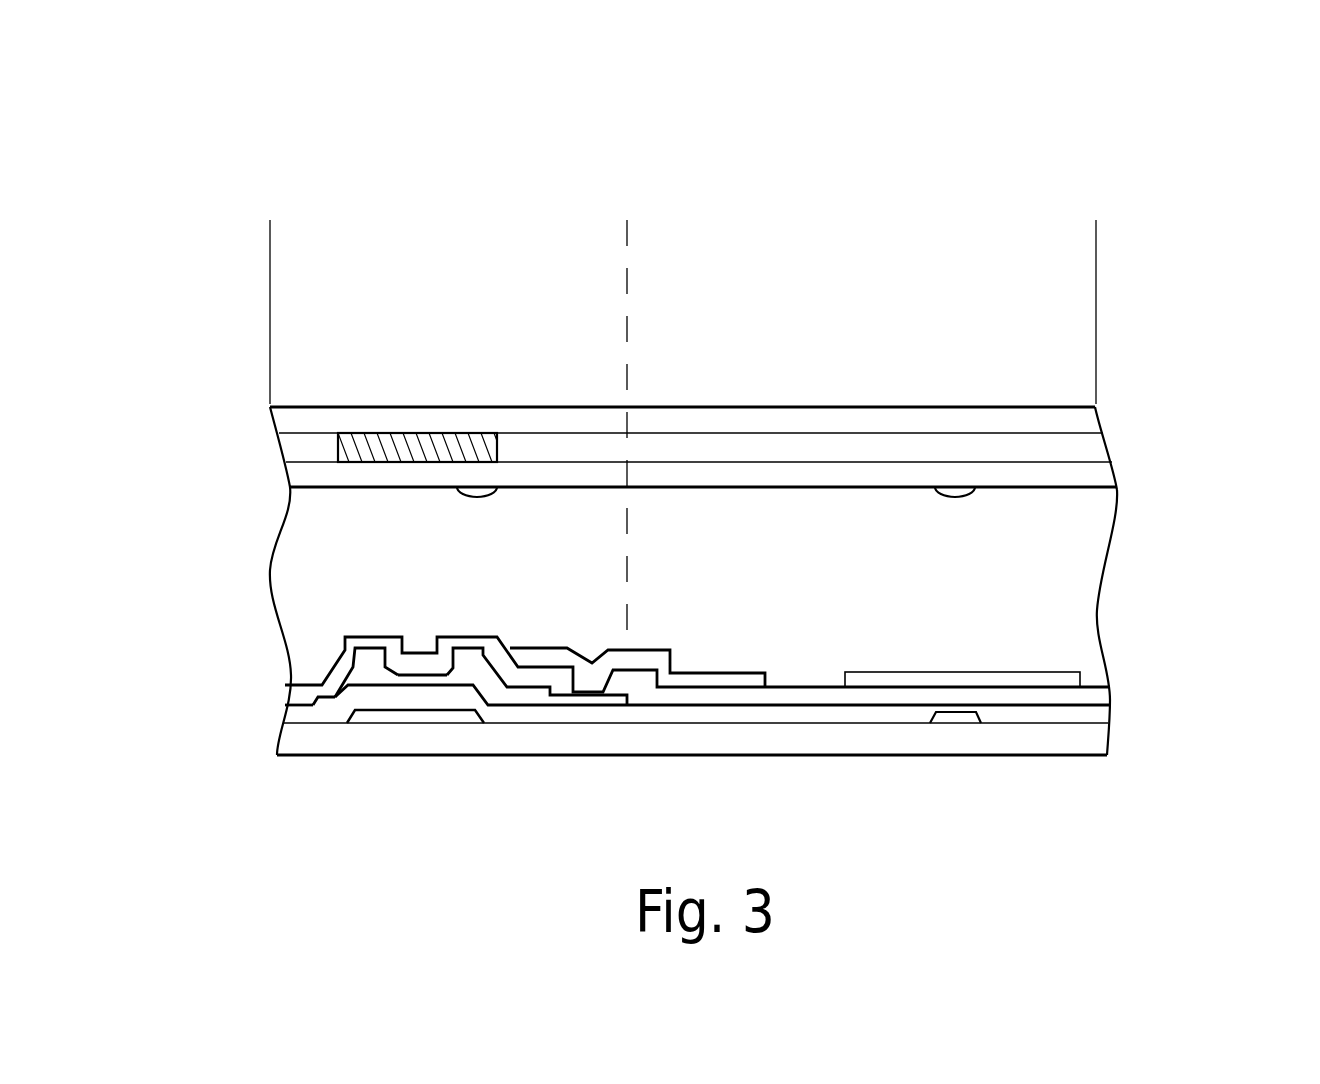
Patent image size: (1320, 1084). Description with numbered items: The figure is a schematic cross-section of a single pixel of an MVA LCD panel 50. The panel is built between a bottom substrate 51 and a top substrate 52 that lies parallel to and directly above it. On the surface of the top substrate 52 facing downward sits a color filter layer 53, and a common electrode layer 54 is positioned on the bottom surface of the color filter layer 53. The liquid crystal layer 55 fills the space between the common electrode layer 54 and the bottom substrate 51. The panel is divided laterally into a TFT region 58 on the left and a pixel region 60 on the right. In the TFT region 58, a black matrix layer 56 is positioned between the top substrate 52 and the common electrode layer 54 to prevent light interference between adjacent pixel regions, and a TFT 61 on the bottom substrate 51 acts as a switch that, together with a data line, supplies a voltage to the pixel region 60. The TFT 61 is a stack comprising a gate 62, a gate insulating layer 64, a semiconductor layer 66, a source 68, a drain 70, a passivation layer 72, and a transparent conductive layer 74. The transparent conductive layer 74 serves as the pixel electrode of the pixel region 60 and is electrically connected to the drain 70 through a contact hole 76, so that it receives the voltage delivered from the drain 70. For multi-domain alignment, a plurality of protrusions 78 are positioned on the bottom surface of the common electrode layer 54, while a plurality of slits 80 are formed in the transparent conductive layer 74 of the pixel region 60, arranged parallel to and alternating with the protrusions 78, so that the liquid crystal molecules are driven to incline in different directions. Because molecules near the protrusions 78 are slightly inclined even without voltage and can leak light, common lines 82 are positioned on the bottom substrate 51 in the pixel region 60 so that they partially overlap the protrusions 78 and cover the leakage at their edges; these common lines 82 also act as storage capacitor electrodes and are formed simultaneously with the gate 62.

The MVA LCD panel 50 is at (1098, 198).
The bottom substrate 51 is at (1053, 756).
The top substrate 52 is at (1002, 405).
The color filter layer 53 is at (1090, 447).
The common electrode layer 54 is at (1095, 479).
The liquid crystal layer 55 is at (1113, 515).
The black matrix layer 56 is at (358, 452).
The TFT region 58 is at (627, 239).
The pixel region 60 is at (1096, 239).
The TFT 61 is at (425, 625).
The gate 62 is at (451, 713).
The gate insulating layer 64 is at (403, 698).
The semiconductor layer 66 is at (313, 704).
The source 68 is at (343, 648).
The drain 70 is at (494, 676).
The passivation layer 72 is at (295, 700).
The transparent conductive layer 74 is at (742, 680).
The contact hole 76 is at (600, 625).
The protrusions 78 is at (478, 486).
The slits 80 is at (803, 672).
The common lines 82 is at (958, 721).